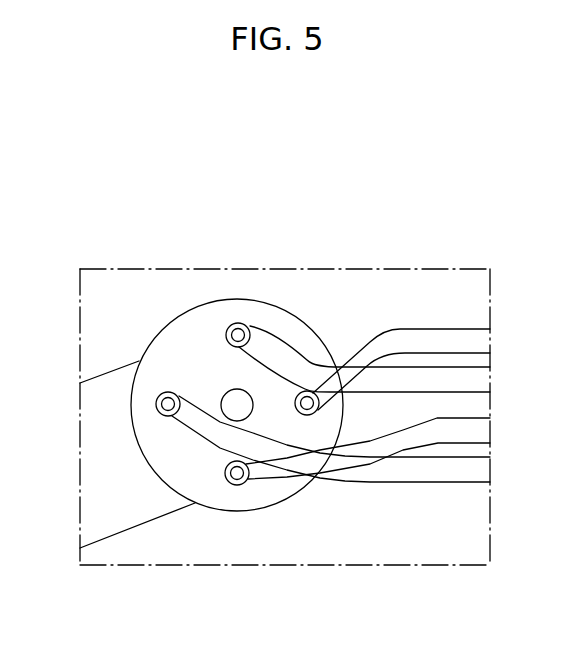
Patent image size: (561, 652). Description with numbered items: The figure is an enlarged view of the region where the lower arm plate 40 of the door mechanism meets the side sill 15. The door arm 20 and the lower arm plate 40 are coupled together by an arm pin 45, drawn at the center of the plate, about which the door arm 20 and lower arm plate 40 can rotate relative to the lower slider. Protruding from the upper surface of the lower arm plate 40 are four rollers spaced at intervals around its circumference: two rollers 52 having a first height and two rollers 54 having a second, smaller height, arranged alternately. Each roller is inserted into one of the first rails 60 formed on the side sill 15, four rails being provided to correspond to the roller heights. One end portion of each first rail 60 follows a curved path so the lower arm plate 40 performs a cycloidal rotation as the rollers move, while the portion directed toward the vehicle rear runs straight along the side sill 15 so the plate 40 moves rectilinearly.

The side sill 15 is at (120, 291).
The door arm 20 is at (97, 510).
The lower arm plate 40 is at (157, 450).
The arm pin 45 is at (235, 398).
The rollers having a first height 52 is at (156, 404).
The rollers having a second height 54 is at (232, 324).
The first rail 60 is at (422, 336).